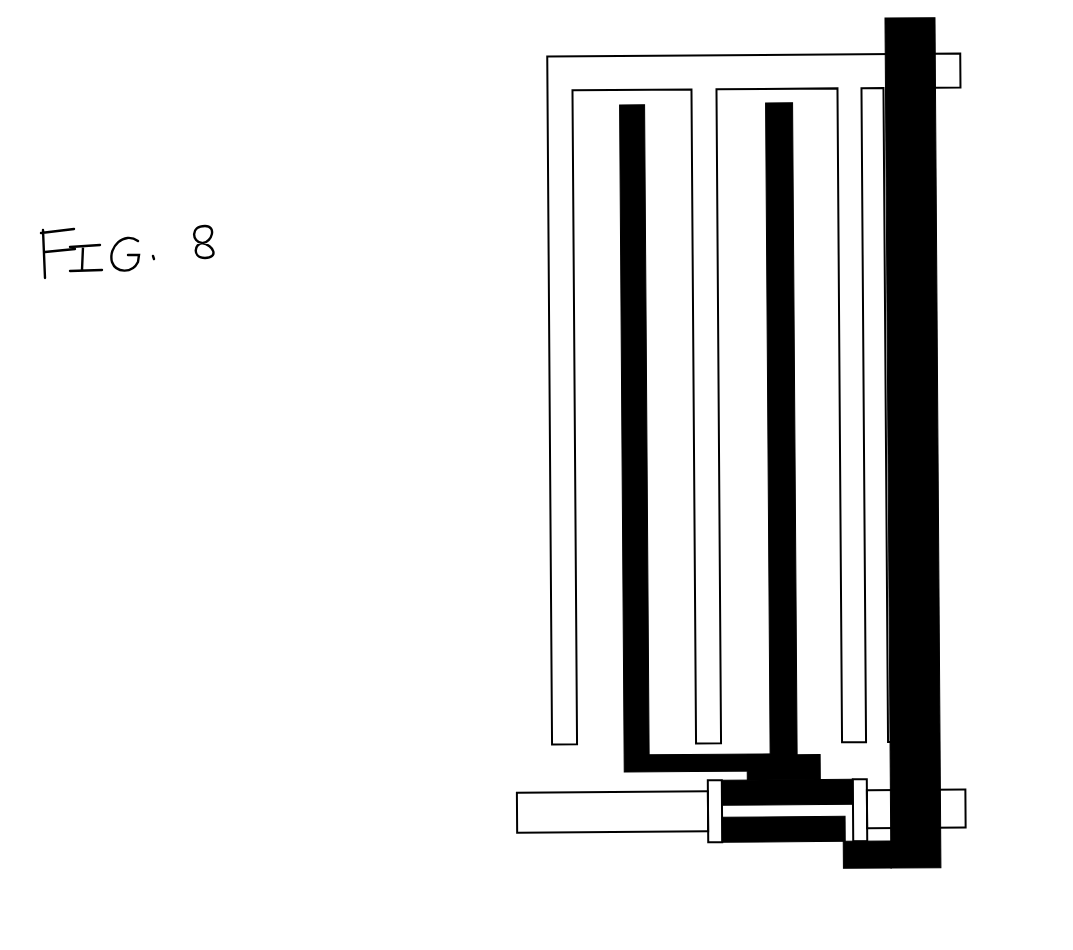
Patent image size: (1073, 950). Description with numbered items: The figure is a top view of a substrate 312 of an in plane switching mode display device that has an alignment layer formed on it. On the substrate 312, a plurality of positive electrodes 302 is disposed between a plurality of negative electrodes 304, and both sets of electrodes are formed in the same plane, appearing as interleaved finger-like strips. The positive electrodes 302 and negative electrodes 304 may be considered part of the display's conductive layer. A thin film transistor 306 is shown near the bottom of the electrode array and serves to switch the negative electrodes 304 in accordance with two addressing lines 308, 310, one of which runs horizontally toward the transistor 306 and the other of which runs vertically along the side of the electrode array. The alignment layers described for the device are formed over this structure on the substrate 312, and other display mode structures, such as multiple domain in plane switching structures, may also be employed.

The positive electrodes 302 is at (702, 544).
The negative electrodes 304 is at (765, 377).
The thin film transistor 306 is at (745, 860).
The addressing line 308 is at (518, 796).
The addressing line 310 is at (940, 553).
The substrate 312 is at (697, 466).